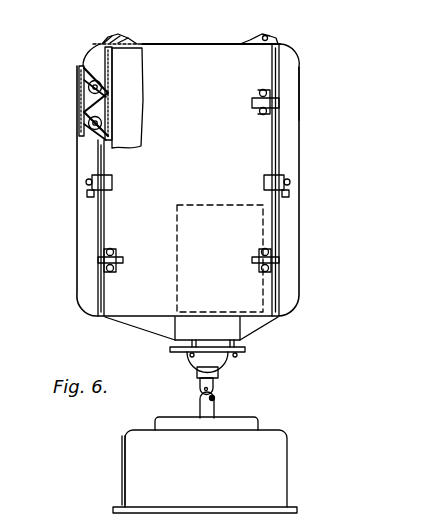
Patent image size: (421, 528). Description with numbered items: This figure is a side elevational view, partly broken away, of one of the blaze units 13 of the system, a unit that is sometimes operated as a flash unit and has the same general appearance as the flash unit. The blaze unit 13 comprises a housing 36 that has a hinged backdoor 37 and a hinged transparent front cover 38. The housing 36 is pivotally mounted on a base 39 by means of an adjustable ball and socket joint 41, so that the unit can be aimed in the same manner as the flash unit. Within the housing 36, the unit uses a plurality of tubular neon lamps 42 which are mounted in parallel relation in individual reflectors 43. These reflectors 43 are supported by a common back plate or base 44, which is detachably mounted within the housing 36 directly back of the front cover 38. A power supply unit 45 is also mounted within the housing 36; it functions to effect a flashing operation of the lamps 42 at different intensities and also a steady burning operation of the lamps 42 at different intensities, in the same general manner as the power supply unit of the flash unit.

The blaze unit 13 is at (345, 83).
The housing 36 is at (191, 43).
The hinged backdoor 37 is at (289, 58).
The hinged transparent front cover 38 is at (79, 63).
The base 39 is at (128, 465).
The adjustable ball and socket joint 41 is at (228, 352).
The tubular neon lamps 42 is at (86, 117).
The reflectors 43 is at (88, 46).
The back plate 44 is at (113, 68).
The power supply unit 45 is at (266, 231).